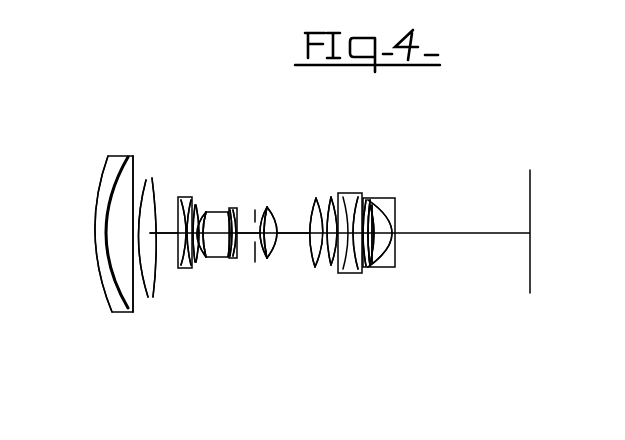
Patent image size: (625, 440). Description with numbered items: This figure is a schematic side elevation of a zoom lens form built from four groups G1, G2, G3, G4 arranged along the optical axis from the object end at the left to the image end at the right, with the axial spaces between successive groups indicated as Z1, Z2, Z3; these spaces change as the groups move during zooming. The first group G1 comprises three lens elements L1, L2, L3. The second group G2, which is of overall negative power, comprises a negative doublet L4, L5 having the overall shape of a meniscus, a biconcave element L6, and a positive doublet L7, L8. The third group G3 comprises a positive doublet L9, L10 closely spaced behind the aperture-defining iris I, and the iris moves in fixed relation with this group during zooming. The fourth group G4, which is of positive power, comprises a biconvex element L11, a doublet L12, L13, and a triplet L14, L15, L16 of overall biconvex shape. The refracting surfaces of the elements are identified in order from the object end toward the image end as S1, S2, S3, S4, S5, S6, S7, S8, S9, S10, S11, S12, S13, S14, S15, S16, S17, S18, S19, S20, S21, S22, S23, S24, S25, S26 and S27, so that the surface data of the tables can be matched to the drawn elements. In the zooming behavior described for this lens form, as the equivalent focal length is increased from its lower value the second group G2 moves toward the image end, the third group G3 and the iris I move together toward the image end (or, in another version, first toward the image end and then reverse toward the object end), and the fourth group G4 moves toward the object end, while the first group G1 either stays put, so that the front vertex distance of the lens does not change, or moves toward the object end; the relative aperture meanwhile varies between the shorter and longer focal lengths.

The first lens group G1 is at (160, 78).
The second lens group G2 is at (172, 93).
The third lens group G3 is at (245, 112).
The fourth lens group G4 is at (305, 132).
The axial space Z1 is at (164, 222).
The axial space Z2 is at (247, 222).
The axial space Z3 is at (293, 222).
The aperture stop I is at (255, 210).
The lens element L1 is at (107, 175).
The lens element L2 is at (118, 157).
The lens element L3 is at (146, 180).
The lens element L4 is at (177, 197).
The lens element L5 is at (177, 199).
The biconcave element L6 is at (204, 212).
The lens element L7 is at (214, 212).
The lens element L8 is at (233, 208).
The lens element L9 is at (267, 206).
The lens element L10 is at (275, 209).
The biconvex element L11 is at (316, 198).
The lens element L12 is at (331, 197).
The lens element L13 is at (349, 193).
The lens element L14 is at (366, 198).
The lens element L15 is at (380, 212).
The lens element L16 is at (390, 223).
The lens element surface S1 is at (95, 242).
The lens element surface S2 is at (110, 263).
The lens element surface S3 is at (128, 288).
The lens element surface S4 is at (134, 292).
The lens element surface S5 is at (152, 288).
The lens element surface S6 is at (176, 264).
The lens element surface S7 is at (180, 268).
The lens element surface S8 is at (177, 268).
The lens element surface S9 is at (178, 268).
The lens element surface S10 is at (196, 262).
The lens element surface S11 is at (206, 257).
The lens element surface S12 is at (227, 258).
The lens element surface S13 is at (231, 259).
The lens element surface S14 is at (236, 259).
The lens element surface S15 is at (262, 257).
The lens element surface S16 is at (267, 258).
The lens element surface S17 is at (275, 257).
The lens element surface S18 is at (314, 266).
The lens element surface S19 is at (318, 266).
The lens element surface S20 is at (330, 264).
The lens element surface S21 is at (338, 266).
The lens element surface S22 is at (348, 273).
The lens element surface S23 is at (372, 268).
The lens element surface S24 is at (365, 250).
The lens element surface S25 is at (370, 245).
The lens surface S26 is at (375, 240).
The lens surface S27 is at (398, 240).